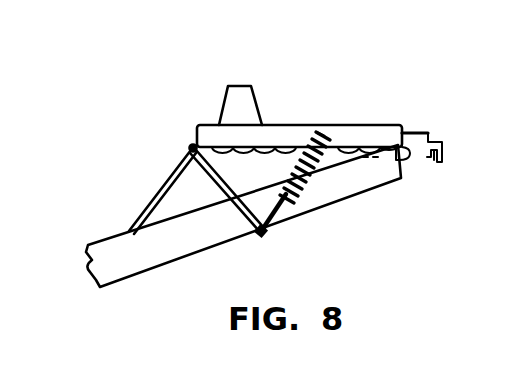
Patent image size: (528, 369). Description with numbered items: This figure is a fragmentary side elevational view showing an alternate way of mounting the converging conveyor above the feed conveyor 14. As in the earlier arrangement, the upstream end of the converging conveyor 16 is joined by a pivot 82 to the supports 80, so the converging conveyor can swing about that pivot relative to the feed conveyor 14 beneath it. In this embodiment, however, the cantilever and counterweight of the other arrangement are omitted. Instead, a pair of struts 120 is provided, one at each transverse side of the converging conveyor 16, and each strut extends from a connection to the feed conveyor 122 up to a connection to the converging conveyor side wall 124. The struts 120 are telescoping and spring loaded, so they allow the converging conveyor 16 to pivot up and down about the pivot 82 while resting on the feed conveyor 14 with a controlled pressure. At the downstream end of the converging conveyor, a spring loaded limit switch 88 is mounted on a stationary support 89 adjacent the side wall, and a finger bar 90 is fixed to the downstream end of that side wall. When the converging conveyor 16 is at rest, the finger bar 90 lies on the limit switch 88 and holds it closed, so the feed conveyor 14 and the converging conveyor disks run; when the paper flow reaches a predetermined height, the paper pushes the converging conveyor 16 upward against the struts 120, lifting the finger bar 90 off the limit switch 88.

The feed conveyor 14 is at (358, 195).
The converging conveyor 16 is at (375, 126).
The supports 80 is at (158, 187).
The pivot 82 is at (191, 138).
The spring loaded limit switch 88 is at (430, 139).
The stationary support 89 is at (441, 153).
The finger bar 90 is at (421, 133).
The struts 120 is at (288, 191).
The connection to the feed conveyor 122 is at (270, 235).
The connection to the converging conveyor side wall 124 is at (318, 128).